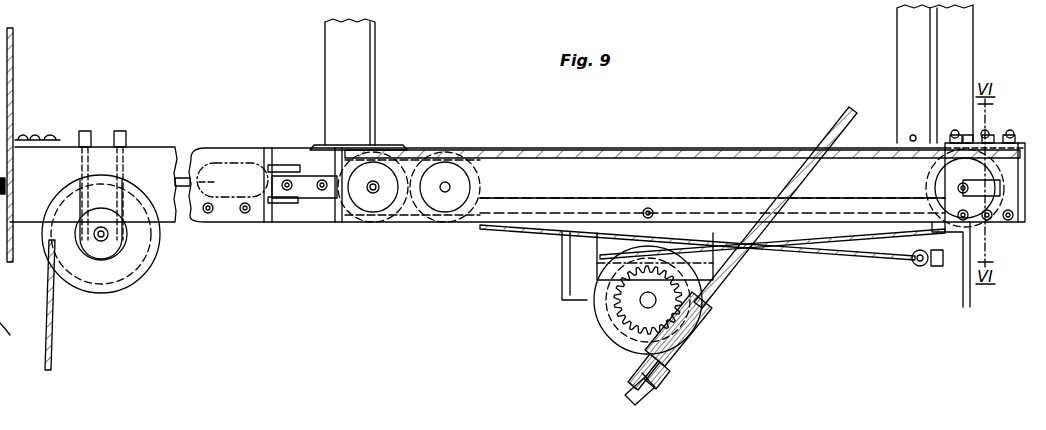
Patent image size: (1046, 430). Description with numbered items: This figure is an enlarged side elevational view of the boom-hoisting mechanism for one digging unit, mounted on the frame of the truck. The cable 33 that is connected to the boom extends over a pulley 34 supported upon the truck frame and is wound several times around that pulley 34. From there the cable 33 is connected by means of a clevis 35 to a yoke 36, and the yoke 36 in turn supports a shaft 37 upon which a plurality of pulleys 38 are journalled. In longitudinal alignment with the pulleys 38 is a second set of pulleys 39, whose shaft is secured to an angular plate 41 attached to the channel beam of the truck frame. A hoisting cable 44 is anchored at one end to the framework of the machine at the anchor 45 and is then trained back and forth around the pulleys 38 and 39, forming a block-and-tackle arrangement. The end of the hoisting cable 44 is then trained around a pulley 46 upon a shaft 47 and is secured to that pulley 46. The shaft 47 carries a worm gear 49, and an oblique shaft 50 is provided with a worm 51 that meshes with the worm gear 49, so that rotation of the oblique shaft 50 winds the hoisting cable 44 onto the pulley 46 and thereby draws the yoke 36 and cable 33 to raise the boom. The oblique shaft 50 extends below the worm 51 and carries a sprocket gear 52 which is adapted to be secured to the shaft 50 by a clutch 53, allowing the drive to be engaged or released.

The cable 33 is at (48, 345).
The pulley 34 is at (143, 272).
The clevis 35 is at (236, 165).
The yoke 36 is at (308, 192).
The shaft 37 is at (373, 187).
The pulleys 38 is at (463, 147).
The second set of pulleys 39 is at (978, 232).
The angular plate 41 is at (1012, 145).
The hoisting cable 44 is at (899, 250).
The anchor 45 is at (932, 237).
The pulley 46 is at (612, 325).
The shaft 47 is at (656, 302).
The worm gear 49 is at (600, 282).
The oblique shaft 50 is at (838, 120).
The worm 51 is at (708, 314).
The sprocket gear 52 is at (672, 382).
The clutch 53 is at (628, 381).